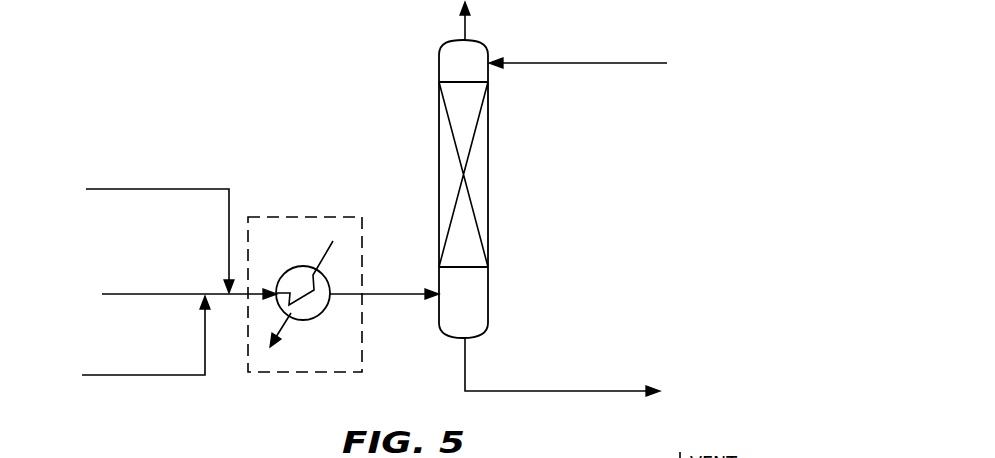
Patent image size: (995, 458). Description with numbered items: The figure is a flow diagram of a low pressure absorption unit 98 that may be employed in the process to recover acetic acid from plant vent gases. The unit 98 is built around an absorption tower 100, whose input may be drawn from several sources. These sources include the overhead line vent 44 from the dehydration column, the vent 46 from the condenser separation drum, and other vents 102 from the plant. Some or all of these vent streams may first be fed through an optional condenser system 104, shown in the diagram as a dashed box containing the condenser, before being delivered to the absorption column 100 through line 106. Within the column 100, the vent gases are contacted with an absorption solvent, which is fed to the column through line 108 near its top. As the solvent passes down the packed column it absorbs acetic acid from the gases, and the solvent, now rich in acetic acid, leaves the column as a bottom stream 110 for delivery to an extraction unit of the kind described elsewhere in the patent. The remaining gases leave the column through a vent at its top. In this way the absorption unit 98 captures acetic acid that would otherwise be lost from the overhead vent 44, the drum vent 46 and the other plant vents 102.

The vent 44 is at (160, 241).
The vent 46 is at (189, 310).
The low pressure absorption unit 98 is at (448, 210).
The absorption tower 100 is at (506, 189).
The other vents from the plant 102 is at (152, 358).
The optional condenser system 104 is at (305, 271).
The line 106 is at (384, 313).
The line 108 is at (578, 45).
The bottom stream 110 is at (562, 367).